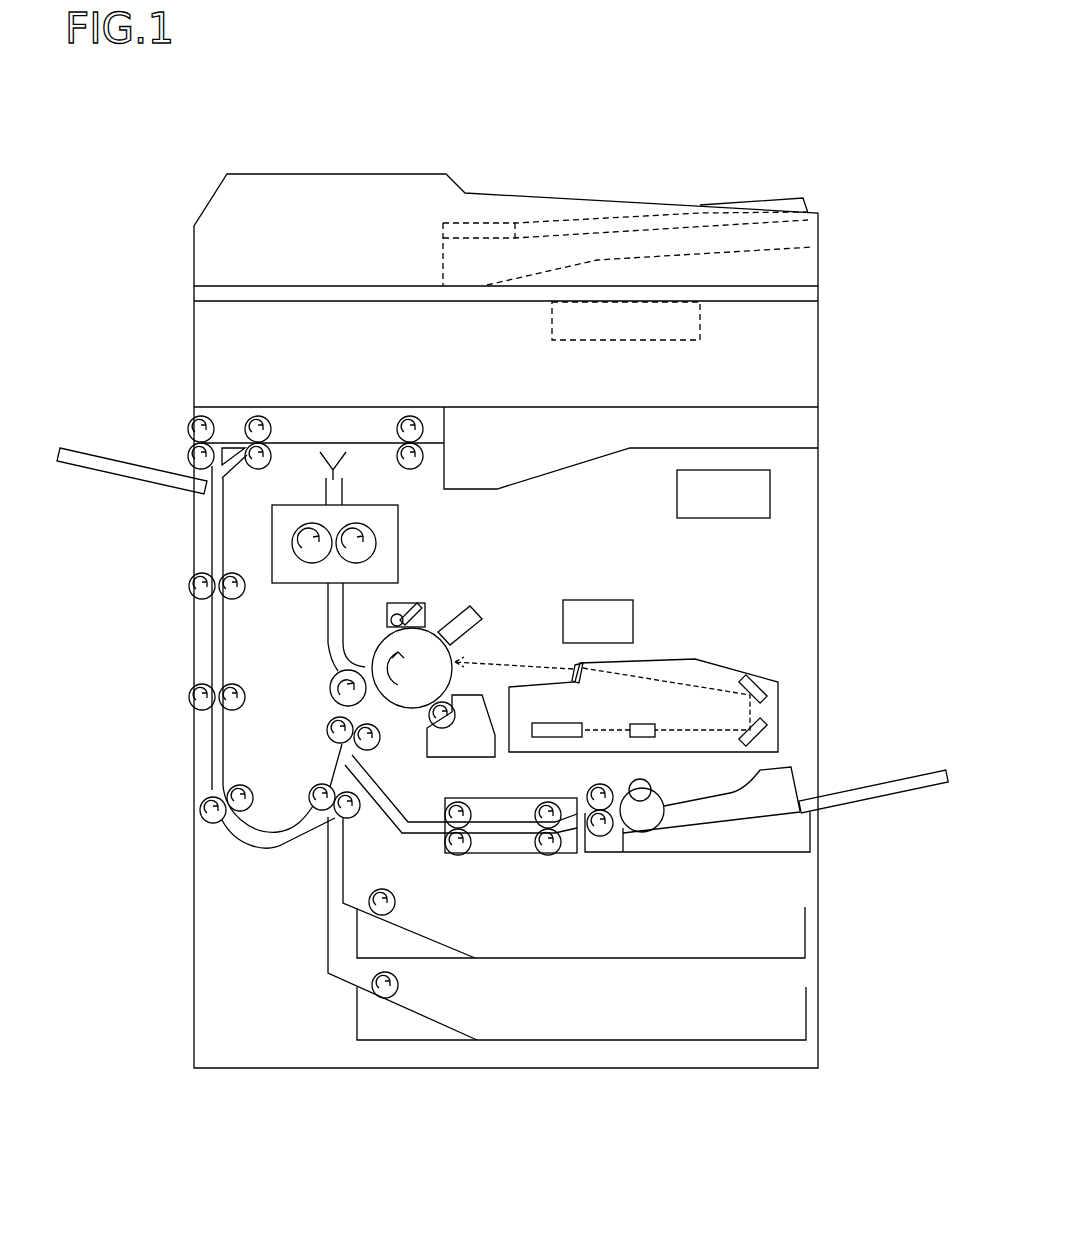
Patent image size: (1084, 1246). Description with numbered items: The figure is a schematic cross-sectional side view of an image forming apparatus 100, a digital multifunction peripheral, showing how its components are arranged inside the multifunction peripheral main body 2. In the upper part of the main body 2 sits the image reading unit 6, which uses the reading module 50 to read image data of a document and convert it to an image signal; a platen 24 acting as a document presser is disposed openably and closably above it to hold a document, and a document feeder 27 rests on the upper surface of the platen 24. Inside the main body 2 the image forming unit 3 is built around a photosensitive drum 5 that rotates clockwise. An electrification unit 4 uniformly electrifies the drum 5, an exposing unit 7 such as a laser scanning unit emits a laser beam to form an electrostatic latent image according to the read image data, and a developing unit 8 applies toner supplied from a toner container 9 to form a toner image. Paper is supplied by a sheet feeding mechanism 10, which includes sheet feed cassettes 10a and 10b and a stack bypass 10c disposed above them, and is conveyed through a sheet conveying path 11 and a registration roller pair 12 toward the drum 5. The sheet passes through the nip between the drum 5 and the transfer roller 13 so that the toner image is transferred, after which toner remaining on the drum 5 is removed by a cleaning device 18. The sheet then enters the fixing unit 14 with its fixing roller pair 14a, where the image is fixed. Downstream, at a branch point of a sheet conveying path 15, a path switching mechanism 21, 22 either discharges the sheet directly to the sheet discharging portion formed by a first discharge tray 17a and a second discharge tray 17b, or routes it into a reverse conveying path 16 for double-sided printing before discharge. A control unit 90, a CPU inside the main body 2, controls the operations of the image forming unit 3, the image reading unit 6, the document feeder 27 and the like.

The image forming apparatus 100 is at (731, 153).
The multifunction peripheral main body 2 is at (819, 555).
The document feeder 27 is at (237, 209).
The platen 24 is at (819, 293).
The image reading unit 6 is at (205, 357).
The reading module 50 is at (620, 342).
The first discharge tray 17a is at (503, 448).
The second discharge tray 17b is at (105, 468).
The path switching mechanism 22 is at (216, 462).
The path switching mechanism 21 is at (333, 440).
The sheet conveying path 15 is at (322, 478).
The fixing unit 14 is at (268, 542).
The fixing roller pair 14a is at (378, 542).
The reverse conveying path 16 is at (210, 633).
The sheet conveying path 11 is at (332, 845).
The transfer roller 13 is at (330, 695).
The registration roller pair 12 is at (338, 740).
The photosensitive drum 5 is at (398, 695).
The cleaning device 18 is at (408, 603).
The electrification unit 4 is at (480, 625).
The developing unit 8 is at (460, 752).
The image forming unit 3 is at (472, 571).
The toner container 9 is at (600, 610).
The exposing unit 7 is at (672, 664).
The control unit 90 is at (771, 492).
The sheet feeding mechanism 10 is at (848, 871).
The sheet feed cassette 10a is at (788, 938).
The sheet feed cassette 10b is at (795, 1020).
The stack bypass 10c is at (848, 778).